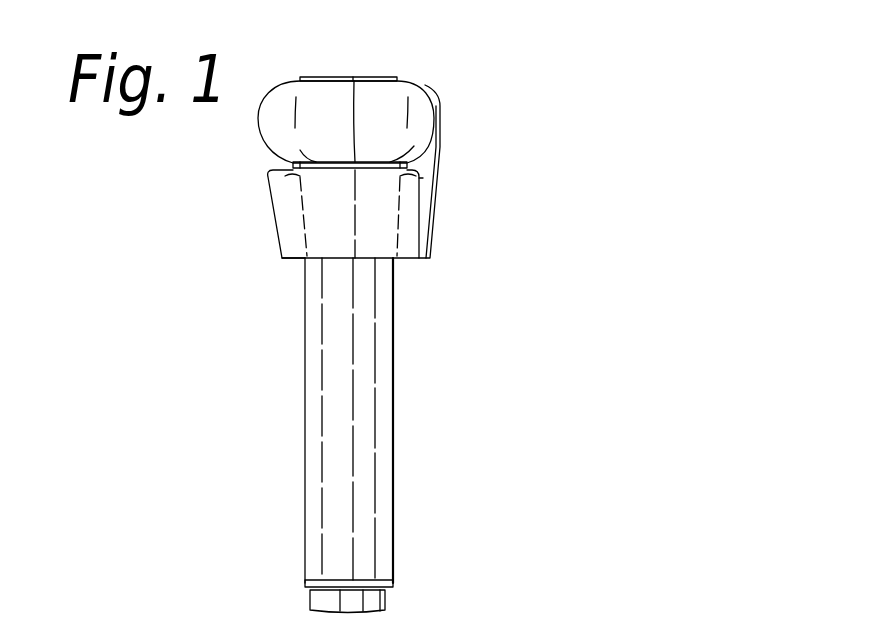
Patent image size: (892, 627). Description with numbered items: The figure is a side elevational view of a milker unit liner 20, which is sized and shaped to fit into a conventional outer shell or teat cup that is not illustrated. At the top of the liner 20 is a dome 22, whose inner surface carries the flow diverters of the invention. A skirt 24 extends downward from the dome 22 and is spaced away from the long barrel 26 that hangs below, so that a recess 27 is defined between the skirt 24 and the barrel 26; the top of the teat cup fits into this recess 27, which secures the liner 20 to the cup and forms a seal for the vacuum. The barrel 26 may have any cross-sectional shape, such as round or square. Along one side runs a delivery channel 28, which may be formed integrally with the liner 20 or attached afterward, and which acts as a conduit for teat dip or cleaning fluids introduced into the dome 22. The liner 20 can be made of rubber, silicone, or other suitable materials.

The milker unit liner 20 is at (471, 87).
The dome 22 is at (397, 107).
The skirt 24 is at (340, 238).
The barrel 26 is at (392, 495).
The recess 27 is at (290, 268).
The delivery channel 28 is at (440, 153).